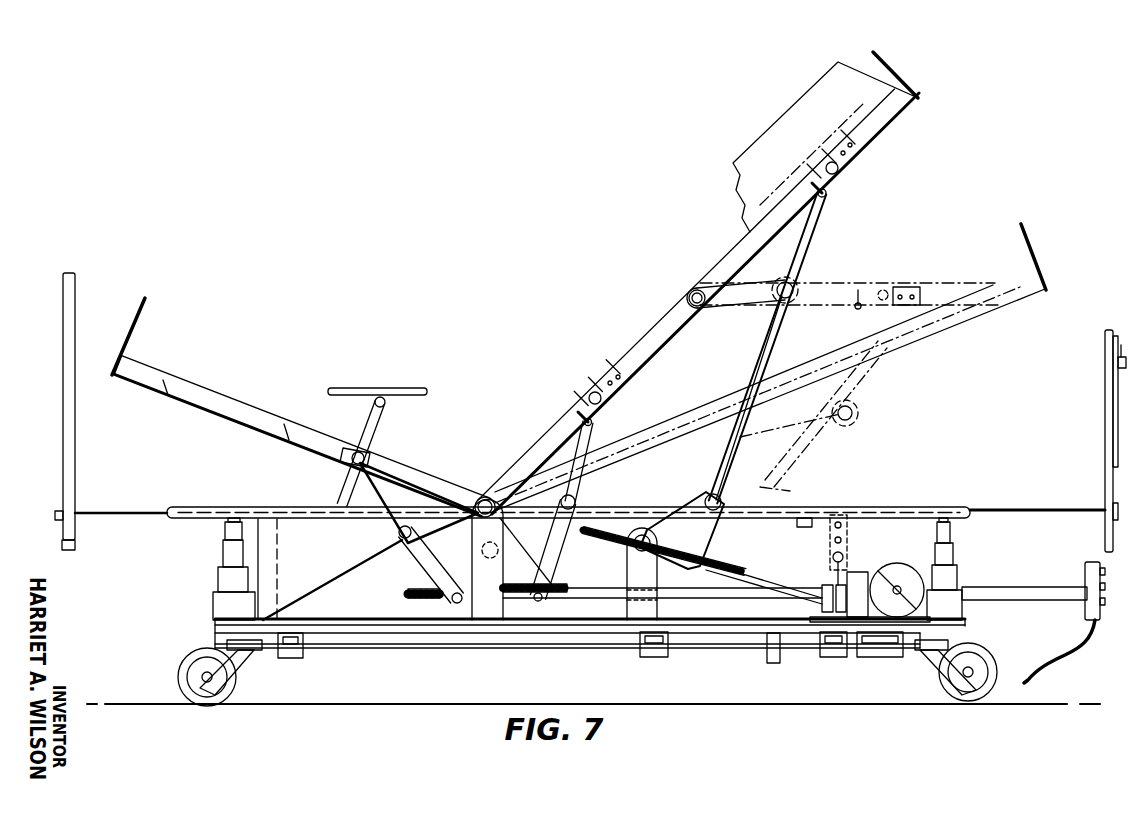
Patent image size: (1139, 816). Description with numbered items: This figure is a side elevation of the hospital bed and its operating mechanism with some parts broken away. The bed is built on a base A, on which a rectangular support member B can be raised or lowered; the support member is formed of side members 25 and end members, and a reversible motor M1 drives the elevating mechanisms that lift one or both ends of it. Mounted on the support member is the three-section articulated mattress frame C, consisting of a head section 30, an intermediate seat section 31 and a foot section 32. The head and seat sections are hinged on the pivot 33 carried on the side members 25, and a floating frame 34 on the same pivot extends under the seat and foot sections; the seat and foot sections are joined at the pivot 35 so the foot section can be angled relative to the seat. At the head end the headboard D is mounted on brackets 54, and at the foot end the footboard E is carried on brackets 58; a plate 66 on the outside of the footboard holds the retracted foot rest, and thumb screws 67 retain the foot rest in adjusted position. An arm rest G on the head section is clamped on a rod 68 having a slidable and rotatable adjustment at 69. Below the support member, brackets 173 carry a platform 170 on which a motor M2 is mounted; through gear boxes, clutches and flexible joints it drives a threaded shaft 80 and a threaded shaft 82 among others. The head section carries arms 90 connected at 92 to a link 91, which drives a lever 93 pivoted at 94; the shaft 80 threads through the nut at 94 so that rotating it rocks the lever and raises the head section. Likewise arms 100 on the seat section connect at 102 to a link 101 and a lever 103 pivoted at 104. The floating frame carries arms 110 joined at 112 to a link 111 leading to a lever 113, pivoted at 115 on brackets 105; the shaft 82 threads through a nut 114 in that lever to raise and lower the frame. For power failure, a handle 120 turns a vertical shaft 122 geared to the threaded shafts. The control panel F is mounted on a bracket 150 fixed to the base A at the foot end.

The side members 25 is at (846, 500).
The head section 30 is at (158, 374).
The intermediate seat section 31 is at (568, 420).
The foot section 32 is at (698, 283).
The pivot 33 is at (490, 486).
The floating frame 34 is at (855, 336).
The pivot 35 is at (692, 292).
The brackets 54 is at (162, 532).
The brackets 58 is at (1052, 514).
The plate 66 is at (1112, 426).
The thumb screws 67 is at (1123, 355).
The rod 68 is at (378, 432).
The slidable and rotatable adjustment 69 is at (343, 461).
The threaded shaft 80 is at (410, 602).
The threaded shaft 82 is at (741, 566).
The arms 90 is at (366, 506).
The link 91 is at (425, 567).
The connection 92 is at (401, 541).
The lever 93 is at (455, 601).
The pivot / nut 94 is at (505, 530).
The arms 100 is at (593, 424).
The link 101 is at (553, 552).
The connection 102 is at (577, 502).
The lever 103 is at (522, 593).
The pivot 104 is at (467, 560).
The brackets 105 is at (657, 598).
The arms 110 is at (792, 250).
The link 111 is at (760, 362).
The connection 112 is at (807, 277).
The lever 113 is at (705, 490).
The nut 114 is at (703, 550).
The pivot 115 is at (632, 549).
The handle 120 is at (842, 529).
The vertical shaft 122 is at (856, 550).
The bracket 150 is at (1053, 588).
The platform 170 is at (340, 617).
The brackets 173 is at (480, 546).
The base A is at (587, 647).
The support member B is at (570, 540).
The mattress frame C is at (300, 407).
The headboard D is at (60, 492).
The footboard E is at (1096, 440).
The control panel F is at (1034, 620).
The arm rest G is at (363, 421).
The motor M1 is at (861, 664).
The motor M2 is at (863, 568).